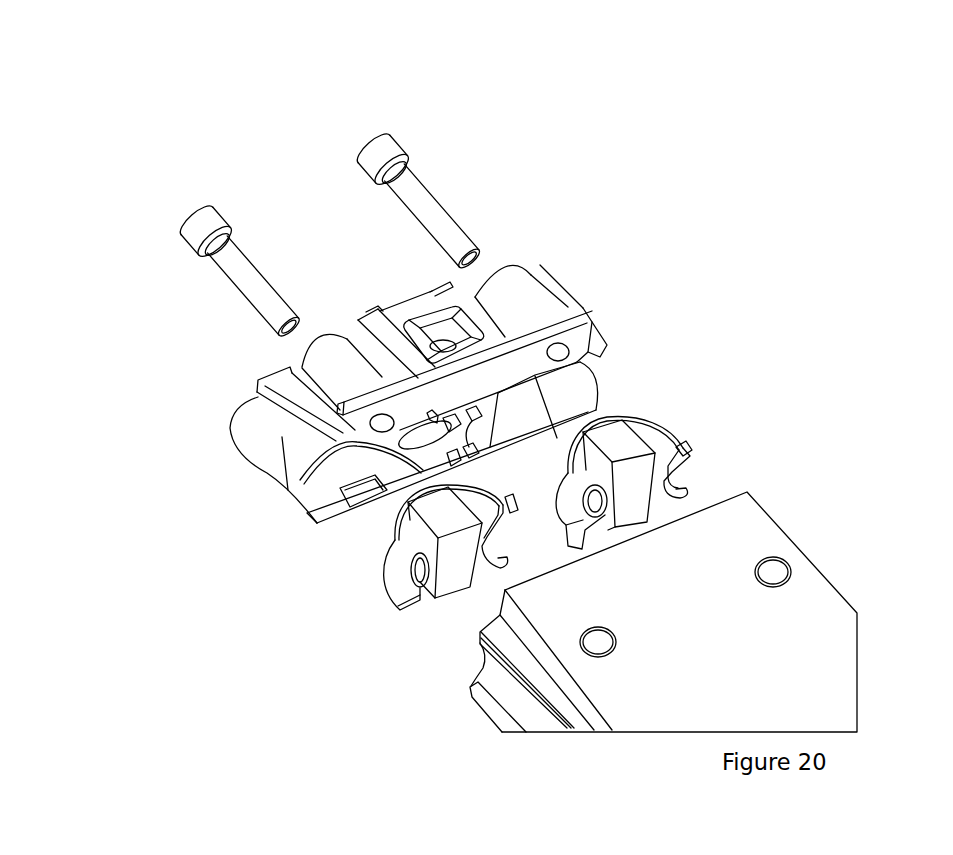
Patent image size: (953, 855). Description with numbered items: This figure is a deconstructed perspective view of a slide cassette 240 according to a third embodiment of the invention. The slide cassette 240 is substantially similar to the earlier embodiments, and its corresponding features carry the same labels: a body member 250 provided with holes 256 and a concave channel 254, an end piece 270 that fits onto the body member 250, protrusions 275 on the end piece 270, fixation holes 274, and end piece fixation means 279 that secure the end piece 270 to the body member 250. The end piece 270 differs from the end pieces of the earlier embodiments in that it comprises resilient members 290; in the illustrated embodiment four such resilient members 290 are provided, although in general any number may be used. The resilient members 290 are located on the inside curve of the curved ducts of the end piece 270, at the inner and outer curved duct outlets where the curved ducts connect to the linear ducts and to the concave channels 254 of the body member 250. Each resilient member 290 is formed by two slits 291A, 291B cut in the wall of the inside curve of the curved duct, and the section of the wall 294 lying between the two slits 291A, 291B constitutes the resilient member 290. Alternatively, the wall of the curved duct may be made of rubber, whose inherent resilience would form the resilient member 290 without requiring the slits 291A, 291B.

The slide cassette 240 is at (186, 640).
The body member 250 is at (797, 650).
The concave channel 254 is at (513, 708).
The holes 256 is at (773, 570).
The end piece 270 is at (643, 420).
The fixation holes 274 is at (377, 422).
The protrusions 275 is at (450, 428).
The end piece fixation means 279 is at (215, 218).
The resilient member 290 is at (670, 477).
The slit 291A is at (424, 567).
The slit 291B is at (418, 597).
The section of the wall 294 is at (390, 601).